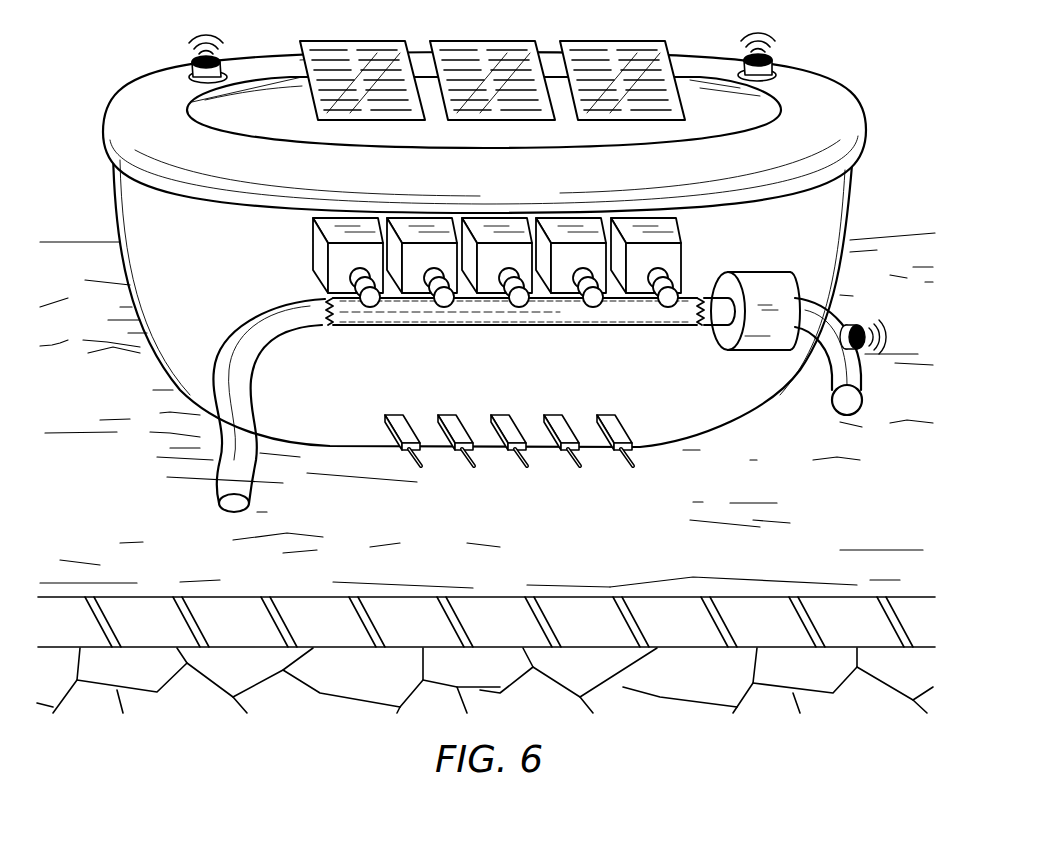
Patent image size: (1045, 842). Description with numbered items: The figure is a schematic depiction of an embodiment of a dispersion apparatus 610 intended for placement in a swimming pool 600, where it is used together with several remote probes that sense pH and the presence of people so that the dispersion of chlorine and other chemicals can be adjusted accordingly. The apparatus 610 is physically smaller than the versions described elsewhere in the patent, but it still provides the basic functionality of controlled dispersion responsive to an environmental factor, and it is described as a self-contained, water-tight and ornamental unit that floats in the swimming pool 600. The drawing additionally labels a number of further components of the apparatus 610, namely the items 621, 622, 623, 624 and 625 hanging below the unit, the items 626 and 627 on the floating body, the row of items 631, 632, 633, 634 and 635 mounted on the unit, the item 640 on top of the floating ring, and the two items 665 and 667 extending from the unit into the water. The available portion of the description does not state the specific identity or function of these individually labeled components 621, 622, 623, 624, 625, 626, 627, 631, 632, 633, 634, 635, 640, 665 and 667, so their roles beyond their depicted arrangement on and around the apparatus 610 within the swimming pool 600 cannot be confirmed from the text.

The swimming pool 600 is at (553, 577).
The dispersion apparatus 610 is at (851, 104).
The first water sensor 621 is at (389, 413).
The second water sensor 622 is at (442, 413).
The third water sensor 623 is at (496, 413).
The fourth water sensor 624 is at (551, 413).
The fifth water sensor 625 is at (611, 413).
The flow sensor 626 is at (858, 325).
The wireless communication module 627 is at (193, 62).
The first sensor module 631 is at (353, 217).
The second sensor module 632 is at (428, 217).
The third sensor module 633 is at (495, 215).
The fourth sensor module 634 is at (557, 215).
The fifth sensor module 635 is at (627, 214).
The solar panels 640 is at (600, 39).
The outlet tube 665 is at (862, 405).
The intake tube 667 is at (233, 512).